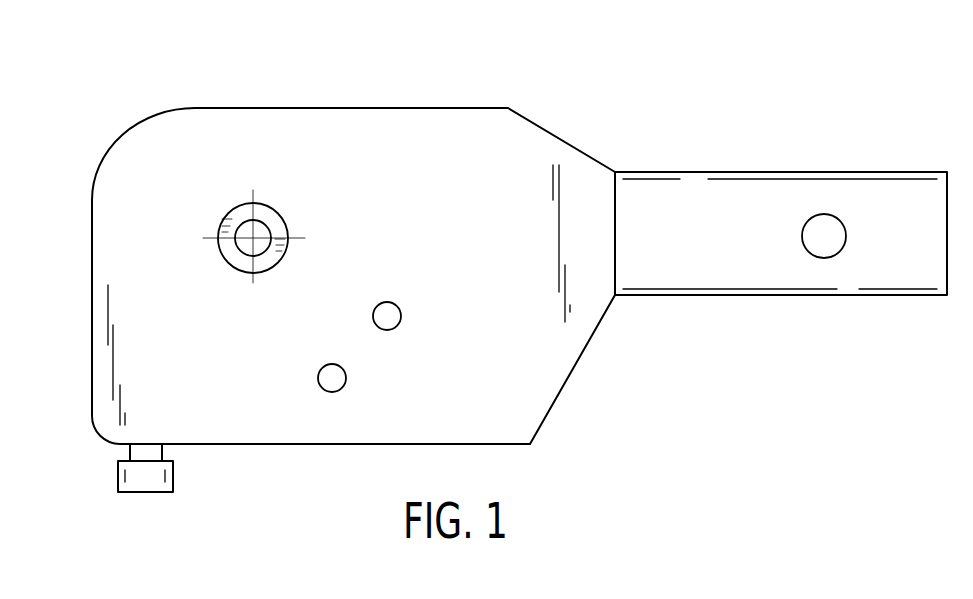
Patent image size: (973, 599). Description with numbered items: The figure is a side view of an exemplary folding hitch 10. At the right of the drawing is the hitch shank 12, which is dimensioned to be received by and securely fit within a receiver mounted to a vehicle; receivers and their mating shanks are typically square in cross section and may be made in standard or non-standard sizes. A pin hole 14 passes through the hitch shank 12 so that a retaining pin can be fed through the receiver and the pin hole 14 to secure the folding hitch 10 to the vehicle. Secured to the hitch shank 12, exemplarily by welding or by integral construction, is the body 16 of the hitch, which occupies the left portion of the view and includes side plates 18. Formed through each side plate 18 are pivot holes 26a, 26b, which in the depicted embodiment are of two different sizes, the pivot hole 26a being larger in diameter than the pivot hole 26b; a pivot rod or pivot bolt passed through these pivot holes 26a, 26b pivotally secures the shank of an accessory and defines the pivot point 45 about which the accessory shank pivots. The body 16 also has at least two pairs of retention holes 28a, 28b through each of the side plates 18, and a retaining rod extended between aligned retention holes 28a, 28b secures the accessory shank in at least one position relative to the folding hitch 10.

The folding hitch 10 is at (585, 113).
The hitch shank 12 is at (733, 173).
The pin hole 14 is at (808, 240).
The body 16 is at (435, 133).
The side plate 18 is at (213, 110).
The pivot hole 26a is at (276, 208).
The pivot hole 26b is at (236, 226).
The retention hole 28a is at (339, 386).
The retention hole 28b is at (394, 322).
The pivot point 45 is at (252, 238).